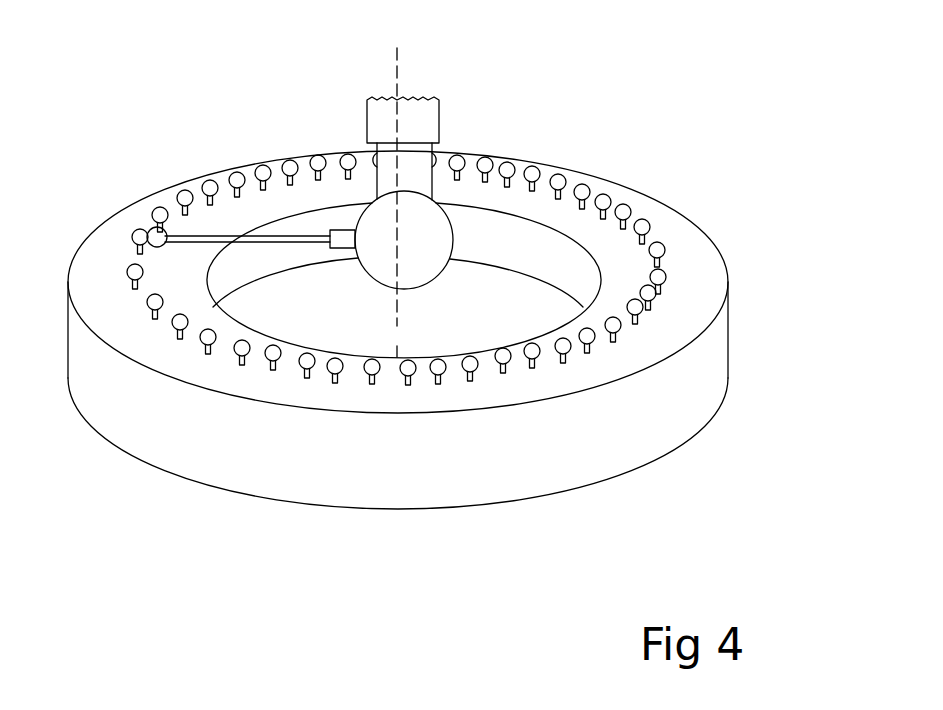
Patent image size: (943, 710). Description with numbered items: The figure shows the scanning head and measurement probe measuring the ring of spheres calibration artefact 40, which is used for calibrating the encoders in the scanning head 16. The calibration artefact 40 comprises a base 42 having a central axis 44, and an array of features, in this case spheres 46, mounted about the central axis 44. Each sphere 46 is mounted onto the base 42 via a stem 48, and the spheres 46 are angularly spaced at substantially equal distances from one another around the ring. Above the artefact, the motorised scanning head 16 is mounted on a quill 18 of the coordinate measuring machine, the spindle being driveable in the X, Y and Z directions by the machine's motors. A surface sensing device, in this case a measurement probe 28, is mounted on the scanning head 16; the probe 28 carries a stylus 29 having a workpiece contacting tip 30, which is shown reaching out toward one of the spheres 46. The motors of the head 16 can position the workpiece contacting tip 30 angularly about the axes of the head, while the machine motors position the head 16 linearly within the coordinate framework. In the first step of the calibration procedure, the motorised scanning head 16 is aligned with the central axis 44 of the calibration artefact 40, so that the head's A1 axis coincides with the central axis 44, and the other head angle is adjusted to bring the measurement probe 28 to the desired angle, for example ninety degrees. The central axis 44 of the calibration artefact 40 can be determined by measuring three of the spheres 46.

The calibration artefact 40 is at (748, 102).
The base 42 is at (660, 438).
The central axis 44 is at (400, 175).
The spheres 46 is at (207, 183).
The stem 48 is at (177, 210).
The motorised scanning head 16 is at (433, 220).
The quill 18 is at (430, 113).
The measurement probe 28 is at (343, 240).
The stylus 29 is at (274, 237).
The workpiece contacting tip 30 is at (157, 242).
The A1 axis A1 is at (396, 341).